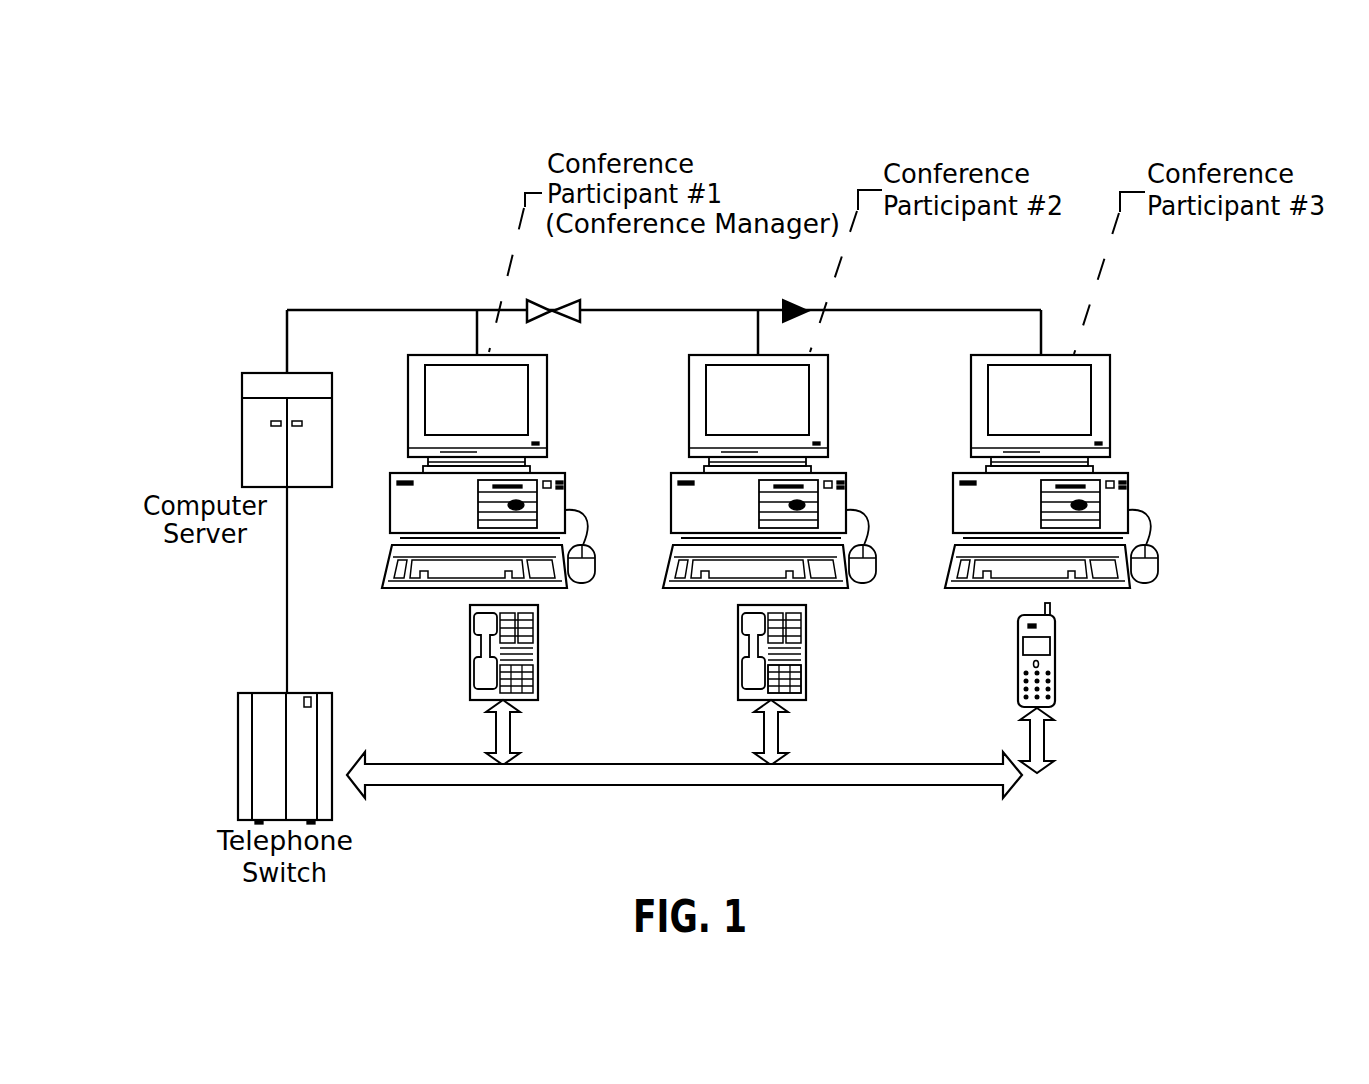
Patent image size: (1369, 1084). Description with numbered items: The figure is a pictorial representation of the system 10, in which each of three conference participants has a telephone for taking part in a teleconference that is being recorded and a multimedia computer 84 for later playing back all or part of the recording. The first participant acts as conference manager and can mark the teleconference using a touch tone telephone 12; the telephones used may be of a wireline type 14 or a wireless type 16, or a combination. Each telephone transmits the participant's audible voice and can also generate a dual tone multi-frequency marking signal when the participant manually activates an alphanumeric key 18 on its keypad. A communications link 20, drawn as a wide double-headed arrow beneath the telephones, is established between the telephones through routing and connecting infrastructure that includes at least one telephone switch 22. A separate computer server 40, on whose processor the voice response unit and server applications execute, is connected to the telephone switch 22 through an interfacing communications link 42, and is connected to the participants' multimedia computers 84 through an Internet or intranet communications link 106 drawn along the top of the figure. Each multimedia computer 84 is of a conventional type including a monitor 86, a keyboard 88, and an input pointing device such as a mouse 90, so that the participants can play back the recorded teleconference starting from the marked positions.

The system 10 is at (306, 183).
The Internet or intranet communications link 106 is at (385, 309).
The computer server 40 is at (243, 395).
The interfacing communications link 42 is at (286, 626).
The telephone switch 22 is at (239, 718).
The multimedia computer 84 is at (548, 402).
The monitor 86 is at (1080, 492).
The keyboard 88 is at (1090, 590).
The mouse 90 is at (1157, 552).
The touch tone telephone 12 is at (452, 607).
The wireline type telephone 14 is at (806, 645).
The alphanumeric key 18 is at (799, 680).
The wireless type telephone 16 is at (1049, 690).
The communications link 20 is at (667, 784).